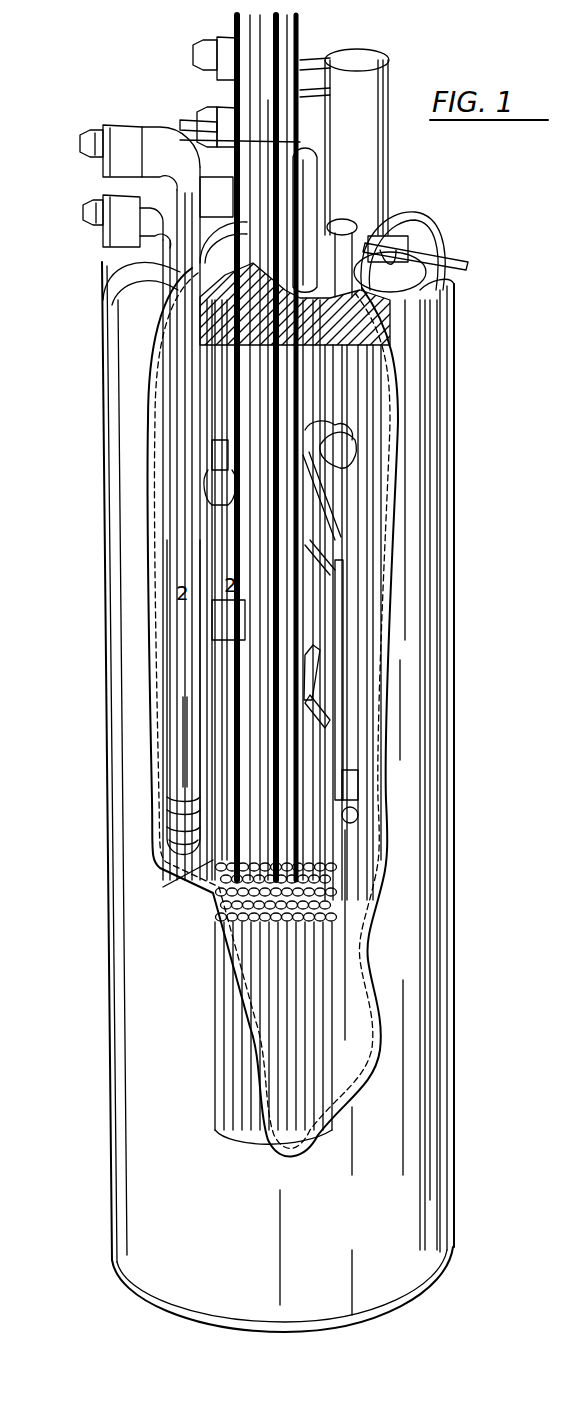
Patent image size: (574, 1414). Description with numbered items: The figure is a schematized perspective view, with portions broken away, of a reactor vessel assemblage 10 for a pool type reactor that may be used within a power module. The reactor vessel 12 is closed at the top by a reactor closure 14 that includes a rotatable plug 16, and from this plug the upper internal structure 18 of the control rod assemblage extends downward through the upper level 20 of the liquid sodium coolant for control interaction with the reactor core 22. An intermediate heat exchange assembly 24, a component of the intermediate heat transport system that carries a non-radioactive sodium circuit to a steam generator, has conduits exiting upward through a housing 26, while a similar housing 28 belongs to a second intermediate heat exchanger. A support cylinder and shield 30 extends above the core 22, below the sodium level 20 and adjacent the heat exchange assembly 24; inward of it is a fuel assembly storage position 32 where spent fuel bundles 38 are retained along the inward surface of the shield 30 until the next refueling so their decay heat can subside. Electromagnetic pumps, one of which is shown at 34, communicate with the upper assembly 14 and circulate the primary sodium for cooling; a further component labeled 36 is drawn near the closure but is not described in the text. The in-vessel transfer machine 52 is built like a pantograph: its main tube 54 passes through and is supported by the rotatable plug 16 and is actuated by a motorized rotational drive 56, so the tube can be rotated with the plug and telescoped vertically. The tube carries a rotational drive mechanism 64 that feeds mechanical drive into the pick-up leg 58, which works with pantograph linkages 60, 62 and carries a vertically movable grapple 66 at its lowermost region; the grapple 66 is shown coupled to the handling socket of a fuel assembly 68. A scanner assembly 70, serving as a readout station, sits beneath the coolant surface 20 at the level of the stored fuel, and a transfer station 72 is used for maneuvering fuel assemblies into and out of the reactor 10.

The reactor vessel assemblage 10 is at (84, 70).
The reactor vessel 12 is at (450, 880).
The reactor closure 14 is at (450, 235).
The rotatable plug 16 is at (200, 322).
The upper internal structure 18 is at (240, 388).
The upper level of liquid sodium coolant 20 is at (380, 422).
The reactor core 22 is at (245, 945).
The intermediate heat exchange assembly 24 is at (184, 565).
The housing 26 is at (148, 128).
The housing 28 is at (392, 75).
The support cylinder and shield 30 is at (350, 518).
The fuel assembly storage position 32 is at (200, 690).
The electromagnetic pump 34 is at (370, 655).
The disc 36 is at (415, 295).
The stored fuel bundles 38 is at (216, 600).
The in-vessel transfer machine 52 is at (355, 690).
The main tube 54 is at (300, 406).
The motorized rotational drive 56 is at (320, 165).
The pick-up leg 58 is at (345, 605).
The pantograph linkage 60 is at (340, 560).
The pantograph linkage 62 is at (340, 710).
The rotational drive mechanism 64 is at (360, 470).
The grapple 66 is at (345, 790).
The fuel assembly 68 is at (330, 848).
The scanner assembly 70 is at (180, 412).
The transfer station 72 is at (395, 196).